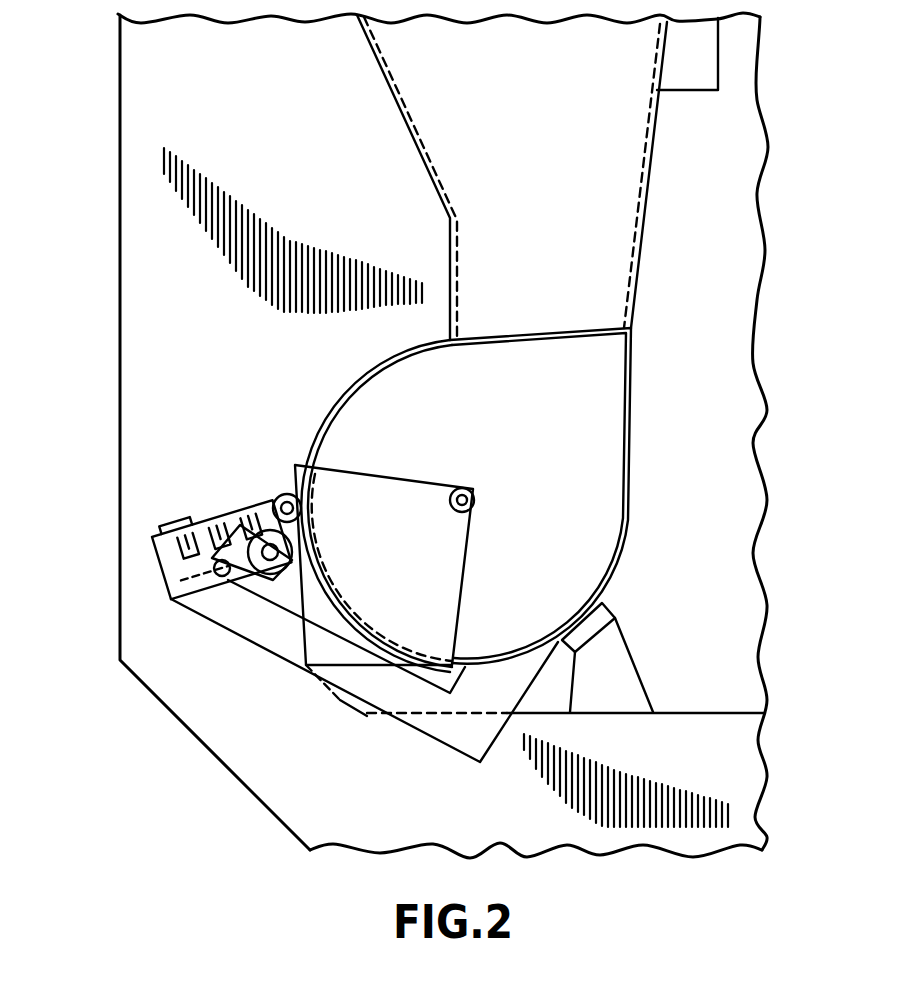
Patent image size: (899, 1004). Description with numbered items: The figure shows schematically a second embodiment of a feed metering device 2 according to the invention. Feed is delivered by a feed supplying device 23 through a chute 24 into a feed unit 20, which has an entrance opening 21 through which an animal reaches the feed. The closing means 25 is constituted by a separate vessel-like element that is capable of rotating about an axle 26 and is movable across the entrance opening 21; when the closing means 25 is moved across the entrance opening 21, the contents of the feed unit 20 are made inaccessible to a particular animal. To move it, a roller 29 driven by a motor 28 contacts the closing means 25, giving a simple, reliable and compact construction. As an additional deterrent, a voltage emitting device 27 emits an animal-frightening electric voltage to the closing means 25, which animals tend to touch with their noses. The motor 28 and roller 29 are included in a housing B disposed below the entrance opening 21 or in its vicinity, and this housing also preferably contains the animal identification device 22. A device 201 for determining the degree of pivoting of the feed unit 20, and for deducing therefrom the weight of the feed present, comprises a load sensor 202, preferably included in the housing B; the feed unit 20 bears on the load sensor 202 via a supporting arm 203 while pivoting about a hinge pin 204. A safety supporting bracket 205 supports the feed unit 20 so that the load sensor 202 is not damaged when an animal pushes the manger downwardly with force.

The feed metering device 2 is at (648, 448).
The feed unit 20 is at (607, 573).
The entrance opening 21 is at (363, 378).
The animal identification device 22 is at (163, 571).
The feed supplying device 23 is at (695, 58).
The chute 24 is at (645, 228).
The closing means 25 is at (328, 487).
The axle 26 is at (477, 495).
The voltage emitting device 27 is at (247, 513).
The motor 28 is at (218, 577).
The roller 29 is at (282, 586).
The device for determining the degree of pivoting 201 is at (198, 520).
The load sensor 202 is at (177, 598).
The supporting arm 203 is at (393, 697).
The hinge pin 204 is at (283, 505).
The safety supporting bracket 205 is at (607, 660).
The housing B is at (156, 587).